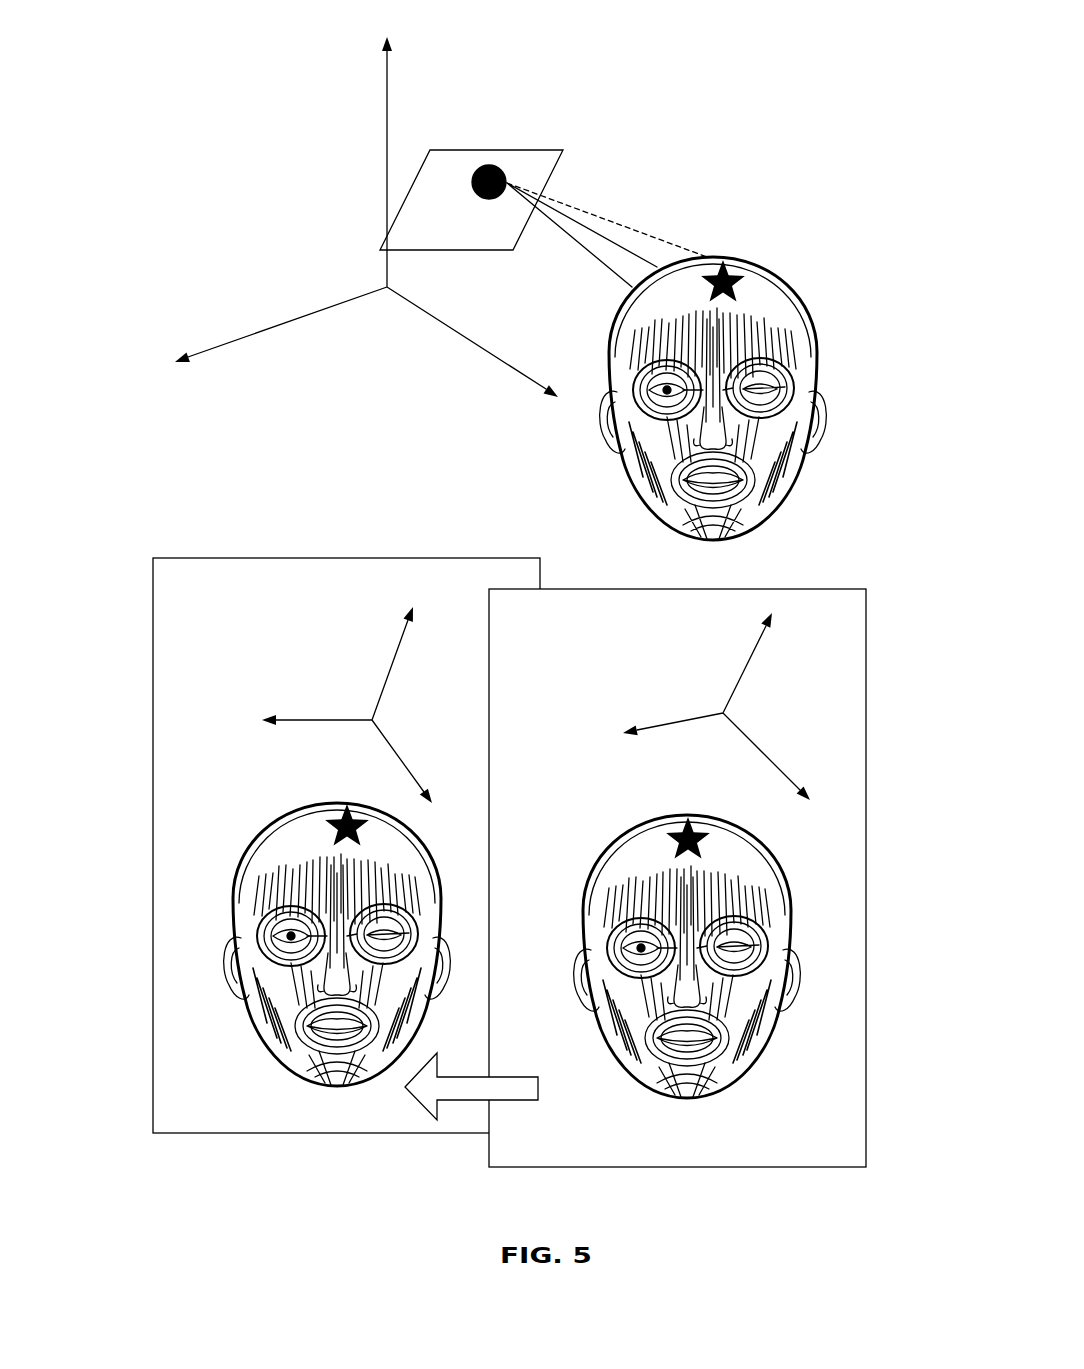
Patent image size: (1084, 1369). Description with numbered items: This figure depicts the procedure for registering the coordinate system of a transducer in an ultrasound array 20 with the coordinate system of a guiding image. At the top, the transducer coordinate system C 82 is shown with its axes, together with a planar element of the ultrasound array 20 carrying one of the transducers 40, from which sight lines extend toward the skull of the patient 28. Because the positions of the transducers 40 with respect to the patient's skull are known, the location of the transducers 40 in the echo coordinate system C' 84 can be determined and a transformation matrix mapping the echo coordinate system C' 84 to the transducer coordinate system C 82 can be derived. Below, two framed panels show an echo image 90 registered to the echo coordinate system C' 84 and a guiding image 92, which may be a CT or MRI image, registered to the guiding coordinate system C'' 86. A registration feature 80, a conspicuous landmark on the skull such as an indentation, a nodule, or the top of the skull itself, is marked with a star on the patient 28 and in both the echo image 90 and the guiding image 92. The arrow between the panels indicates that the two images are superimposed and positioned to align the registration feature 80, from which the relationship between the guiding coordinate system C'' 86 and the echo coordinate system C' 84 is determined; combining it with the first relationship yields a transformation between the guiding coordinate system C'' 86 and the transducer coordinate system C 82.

The ultrasound array 20 is at (458, 152).
The patient 28 is at (817, 345).
The transducers 40 is at (505, 173).
The registration feature 80 is at (732, 275).
The transducer coordinate system C 82 is at (298, 168).
The echo coordinate system C' 84 is at (305, 673).
The guiding coordinate system C'' 86 is at (700, 703).
The echo image 90 is at (154, 740).
The guiding image 92 is at (867, 755).